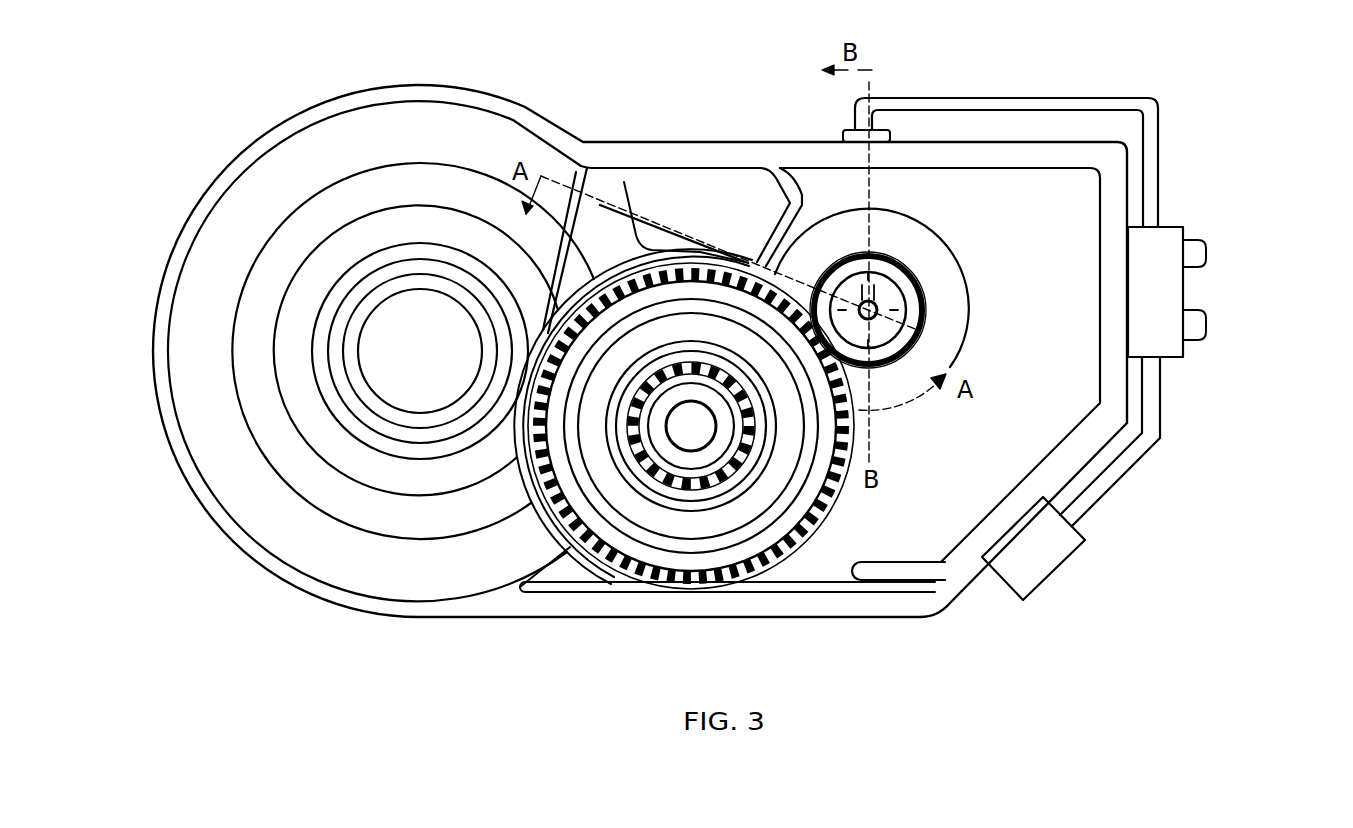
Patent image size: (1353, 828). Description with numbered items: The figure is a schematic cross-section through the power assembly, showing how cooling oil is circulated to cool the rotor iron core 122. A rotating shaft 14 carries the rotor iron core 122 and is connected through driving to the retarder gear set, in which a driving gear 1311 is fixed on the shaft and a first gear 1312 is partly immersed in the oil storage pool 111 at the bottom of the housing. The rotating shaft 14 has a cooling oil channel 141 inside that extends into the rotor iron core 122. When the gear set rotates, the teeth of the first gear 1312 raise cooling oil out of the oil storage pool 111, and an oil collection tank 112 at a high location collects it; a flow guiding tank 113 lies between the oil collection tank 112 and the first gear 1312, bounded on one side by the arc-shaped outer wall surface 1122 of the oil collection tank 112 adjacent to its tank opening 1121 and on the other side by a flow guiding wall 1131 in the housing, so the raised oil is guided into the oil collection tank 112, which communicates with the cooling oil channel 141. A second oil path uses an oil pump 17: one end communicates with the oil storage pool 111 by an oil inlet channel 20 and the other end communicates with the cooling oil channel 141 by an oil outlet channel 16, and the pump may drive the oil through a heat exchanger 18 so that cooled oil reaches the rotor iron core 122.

The oil storage pool 111 is at (810, 568).
The oil collection tank 112 is at (690, 233).
The tank opening 1121 is at (605, 205).
The outer wall surface 1122 is at (580, 212).
The flow guiding tank 113 is at (626, 184).
The flow guiding wall 1131 is at (560, 293).
The driving gear 1311 is at (868, 307).
The first gear 1312 is at (790, 455).
The rotating shaft 14 is at (915, 285).
The cooling oil channel 141 is at (935, 312).
The rotor iron core 122 is at (908, 240).
The oil outlet channel 16 is at (1058, 104).
The oil pump 17 is at (1025, 560).
The heat exchanger 18 is at (1155, 273).
The oil inlet channel 20 is at (890, 572).